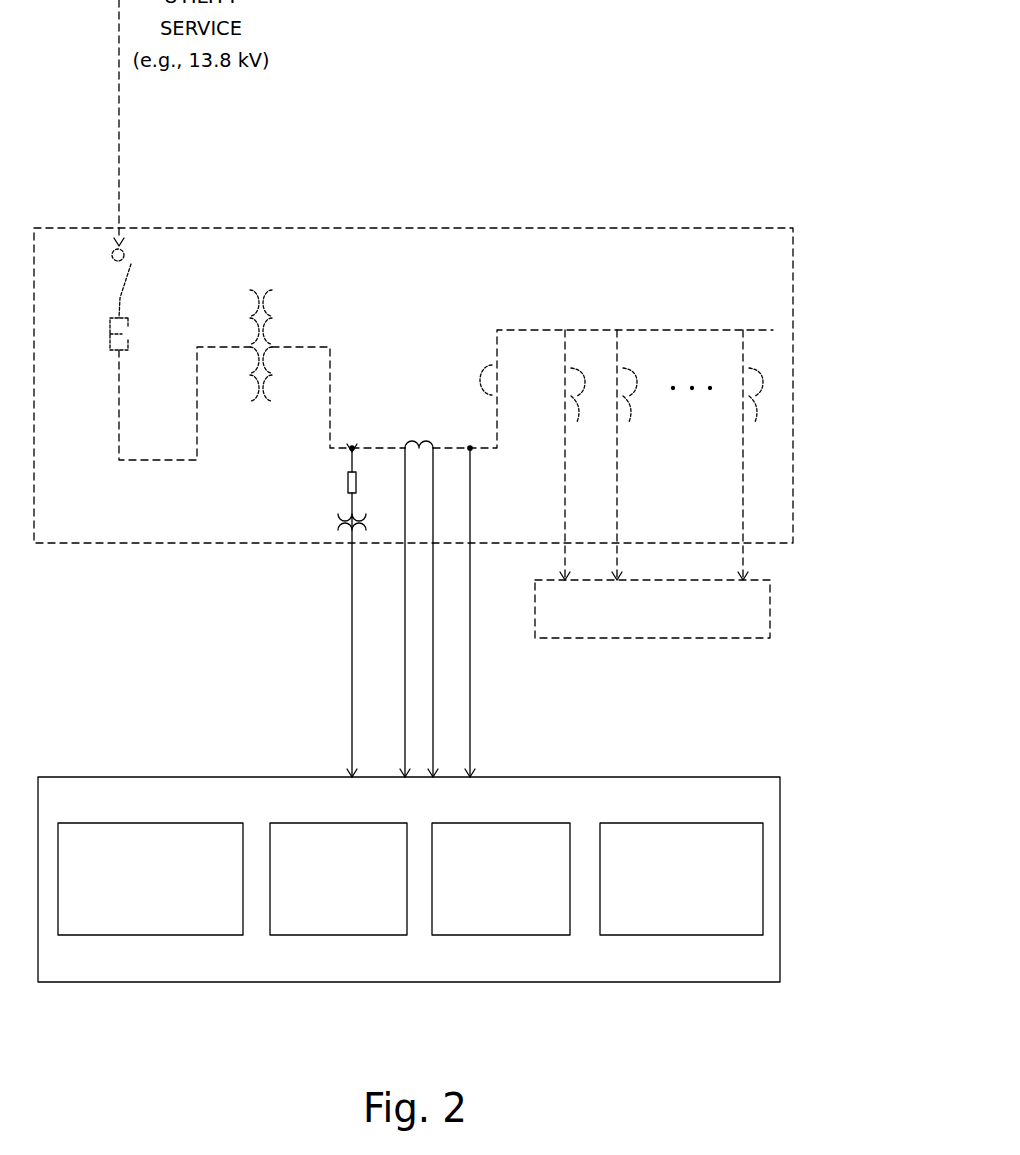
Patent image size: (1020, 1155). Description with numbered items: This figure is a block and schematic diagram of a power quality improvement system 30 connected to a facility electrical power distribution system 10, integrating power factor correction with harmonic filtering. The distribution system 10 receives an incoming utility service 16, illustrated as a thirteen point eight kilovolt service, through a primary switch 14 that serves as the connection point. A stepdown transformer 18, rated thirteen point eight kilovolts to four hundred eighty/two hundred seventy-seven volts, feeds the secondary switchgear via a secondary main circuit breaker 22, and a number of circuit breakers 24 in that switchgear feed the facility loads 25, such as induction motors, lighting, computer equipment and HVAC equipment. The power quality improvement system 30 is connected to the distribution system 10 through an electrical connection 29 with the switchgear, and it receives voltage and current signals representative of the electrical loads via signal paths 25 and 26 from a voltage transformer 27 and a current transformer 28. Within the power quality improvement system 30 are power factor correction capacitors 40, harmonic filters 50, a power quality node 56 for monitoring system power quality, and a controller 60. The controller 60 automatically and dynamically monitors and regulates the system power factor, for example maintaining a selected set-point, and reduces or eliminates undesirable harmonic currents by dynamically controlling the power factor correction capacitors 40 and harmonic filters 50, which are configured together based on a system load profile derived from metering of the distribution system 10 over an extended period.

The facility electrical power distribution system 10 is at (722, 192).
The primary switch 14 is at (103, 318).
The utility service 16 is at (119, 133).
The stepdown transformer 18 is at (287, 330).
The secondary main circuit breaker 22 is at (561, 429).
The circuit breakers 24 is at (631, 410).
The facility loads / signal path 25 is at (770, 618).
The signal path 26 is at (407, 740).
The voltage transformer 27 is at (370, 522).
The current transformer 28 is at (402, 450).
The electrical connection 29 is at (473, 741).
The power quality improvement system 30 is at (876, 700).
The power factor correction capacitors 40 is at (127, 935).
The harmonic filters 50 is at (325, 935).
The power quality node 56 is at (482, 935).
The controller 60 is at (658, 935).